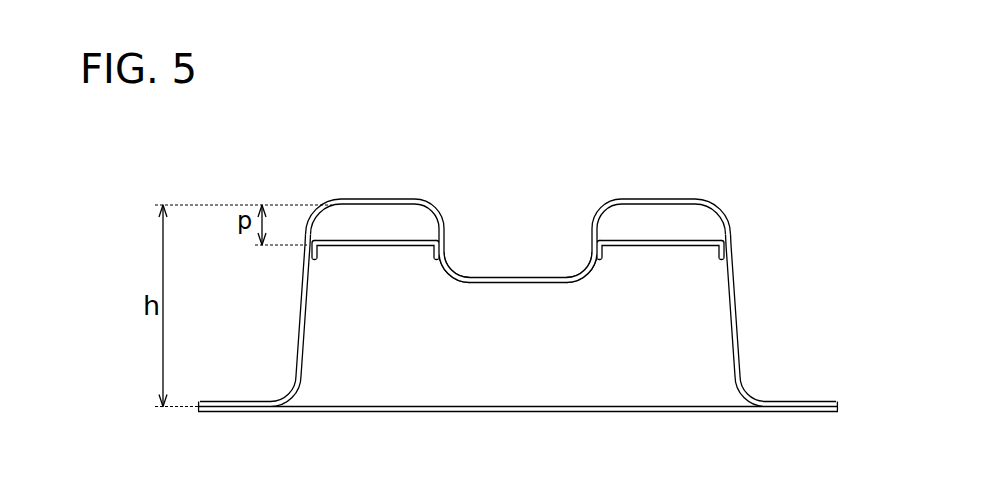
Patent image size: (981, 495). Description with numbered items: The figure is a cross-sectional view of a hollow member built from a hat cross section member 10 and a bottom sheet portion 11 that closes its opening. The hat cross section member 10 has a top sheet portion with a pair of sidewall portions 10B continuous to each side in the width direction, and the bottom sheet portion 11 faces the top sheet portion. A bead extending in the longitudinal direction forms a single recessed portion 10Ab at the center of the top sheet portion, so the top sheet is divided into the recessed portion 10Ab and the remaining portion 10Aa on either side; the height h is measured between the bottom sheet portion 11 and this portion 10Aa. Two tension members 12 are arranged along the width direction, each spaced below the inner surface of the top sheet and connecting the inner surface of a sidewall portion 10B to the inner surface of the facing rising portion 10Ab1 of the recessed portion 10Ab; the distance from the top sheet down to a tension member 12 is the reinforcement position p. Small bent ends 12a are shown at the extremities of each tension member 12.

The hat cross section member 10 is at (518, 241).
The portion other than the recessed portion 10Aa is at (378, 199).
The recessed portion 10Ab is at (501, 277).
The rising portion 10Ab1 is at (592, 227).
The sidewall portion 10B is at (298, 317).
The bottom sheet portion 11 is at (513, 412).
The tension member 12 is at (378, 247).
The bent tab of partition plate 12a is at (318, 256).